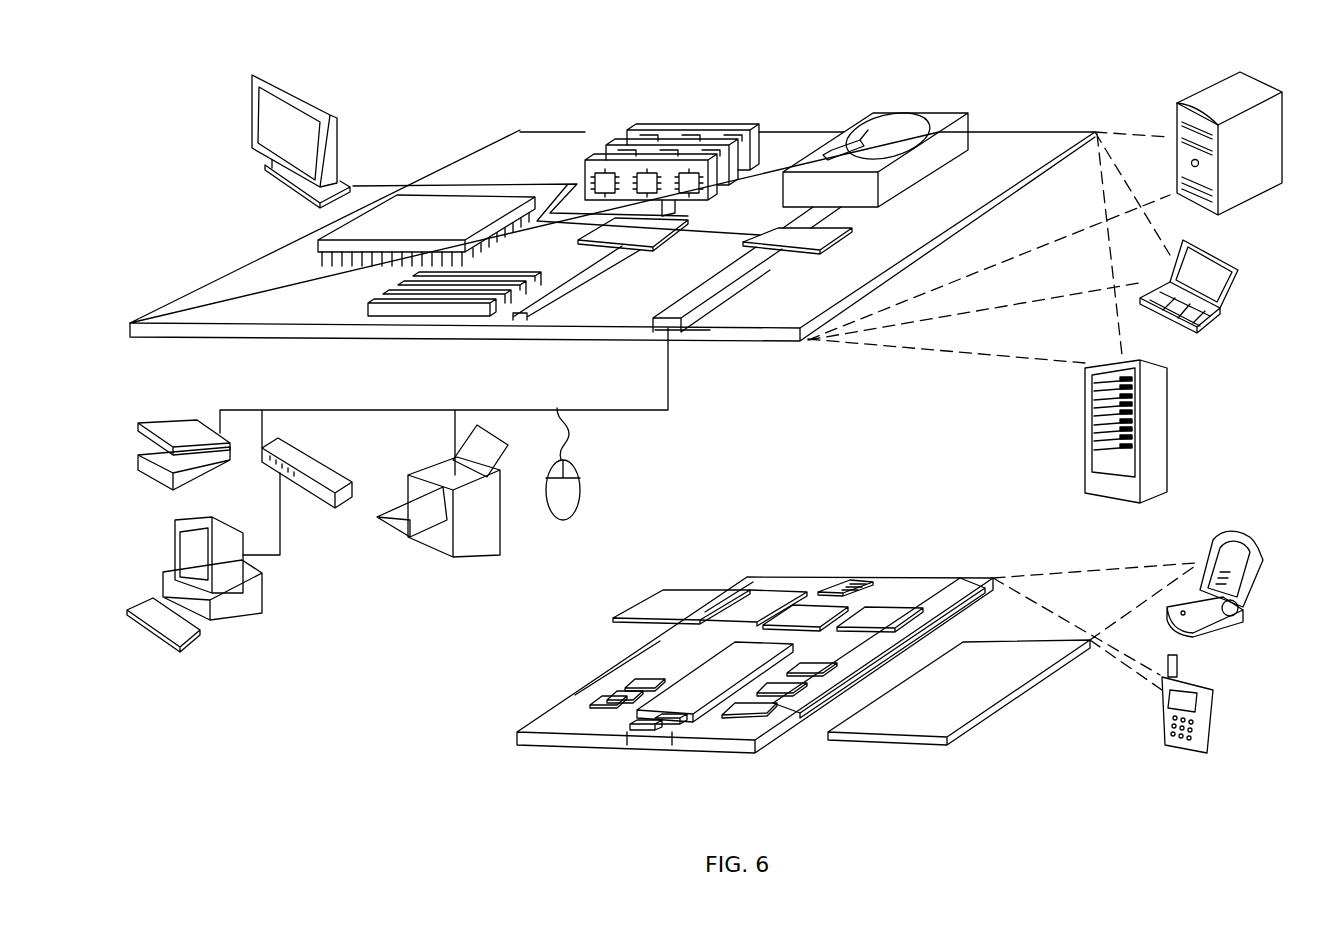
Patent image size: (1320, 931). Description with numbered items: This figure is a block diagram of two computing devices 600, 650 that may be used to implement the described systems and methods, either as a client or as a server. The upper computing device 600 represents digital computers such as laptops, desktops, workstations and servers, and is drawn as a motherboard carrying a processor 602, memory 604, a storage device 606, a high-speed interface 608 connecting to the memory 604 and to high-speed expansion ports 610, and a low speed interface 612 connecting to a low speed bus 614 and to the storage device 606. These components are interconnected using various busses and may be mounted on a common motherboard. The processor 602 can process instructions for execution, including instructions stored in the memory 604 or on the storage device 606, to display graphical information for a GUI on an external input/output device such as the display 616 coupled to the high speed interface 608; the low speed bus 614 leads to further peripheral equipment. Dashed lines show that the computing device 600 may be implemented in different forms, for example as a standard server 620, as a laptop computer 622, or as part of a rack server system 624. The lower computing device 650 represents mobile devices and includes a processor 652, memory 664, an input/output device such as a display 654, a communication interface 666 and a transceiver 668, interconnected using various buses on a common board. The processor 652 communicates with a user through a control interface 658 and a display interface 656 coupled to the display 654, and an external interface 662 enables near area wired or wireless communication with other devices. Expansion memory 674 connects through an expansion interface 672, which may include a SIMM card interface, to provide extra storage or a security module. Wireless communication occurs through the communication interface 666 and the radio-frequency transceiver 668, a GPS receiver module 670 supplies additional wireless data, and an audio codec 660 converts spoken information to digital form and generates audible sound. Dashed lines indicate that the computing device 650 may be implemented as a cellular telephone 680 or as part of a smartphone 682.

The computing device 600 is at (441, 99).
The processor 602 is at (320, 240).
The memory 604 is at (640, 129).
The storage device 606 is at (877, 113).
The high-speed interface 608 is at (612, 230).
The high-speed expansion ports 610 is at (387, 298).
The low speed interface 612 is at (780, 235).
The low speed bus 614 is at (707, 330).
The display 616 is at (257, 77).
The standard server 620 is at (1175, 122).
The laptop computer 622 is at (1239, 260).
The rack server system 624 is at (1085, 455).
The computing device 650 is at (495, 742).
The processor 652 is at (687, 702).
The display 654 is at (917, 722).
The display interface 656 is at (757, 713).
The control interface 658 is at (790, 693).
The audio codec 660 is at (815, 673).
The external interface 662 is at (654, 738).
The memory 664 is at (607, 693).
The communication interface 666 is at (803, 615).
The transceiver 668 is at (883, 613).
The GPS receiver module 670 is at (857, 580).
The expansion interface 672 is at (738, 590).
The expansion memory 674 is at (655, 589).
The cellular telephone 680 is at (1213, 510).
The smartphone 682 is at (1163, 717).